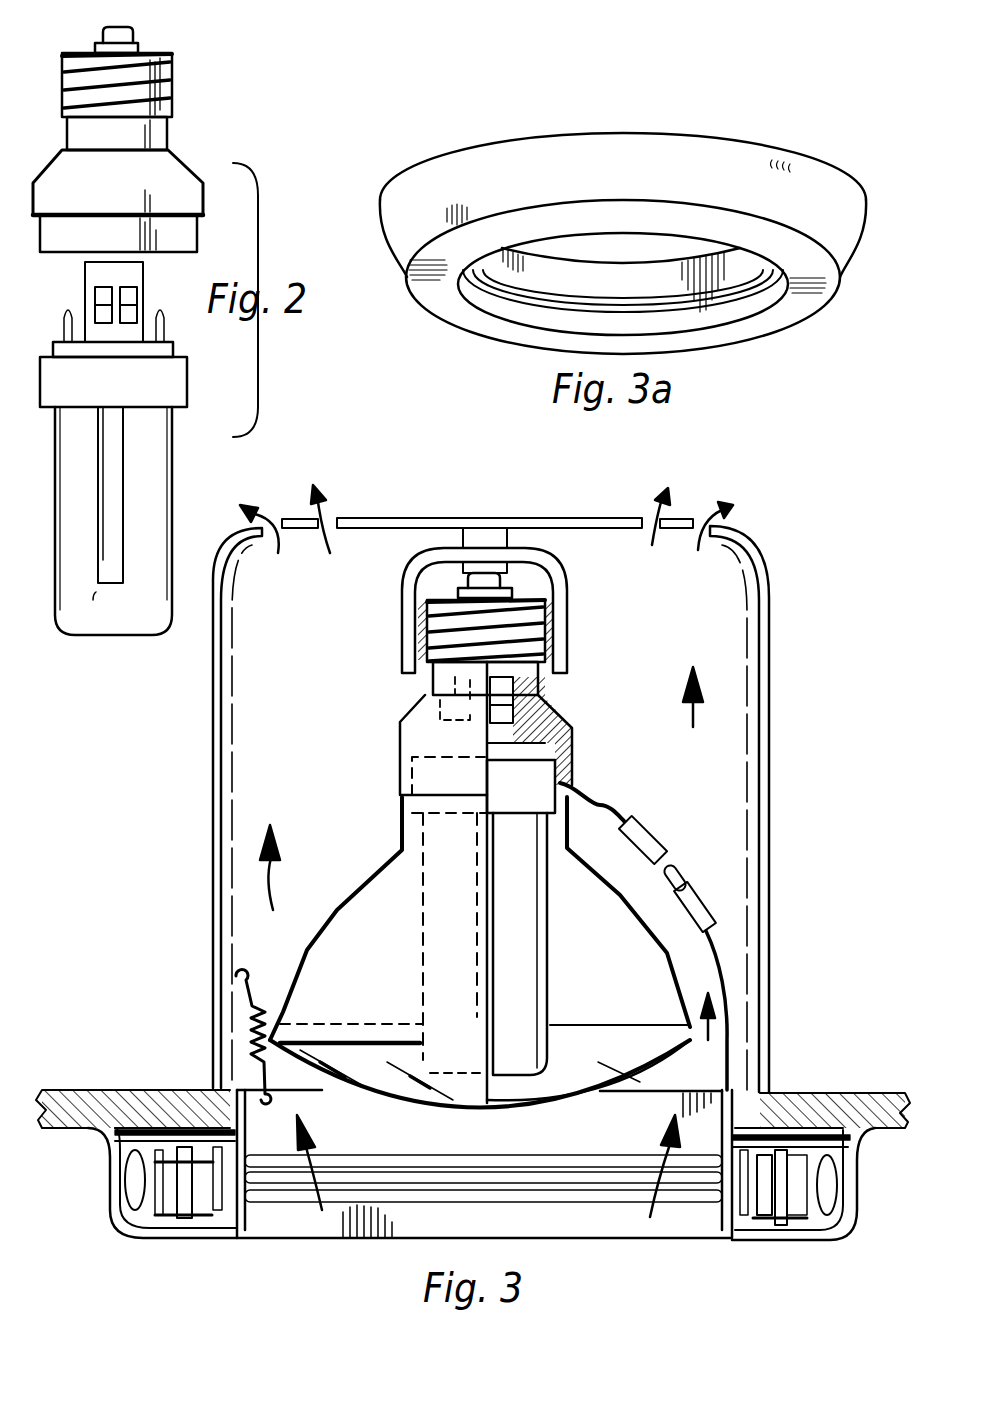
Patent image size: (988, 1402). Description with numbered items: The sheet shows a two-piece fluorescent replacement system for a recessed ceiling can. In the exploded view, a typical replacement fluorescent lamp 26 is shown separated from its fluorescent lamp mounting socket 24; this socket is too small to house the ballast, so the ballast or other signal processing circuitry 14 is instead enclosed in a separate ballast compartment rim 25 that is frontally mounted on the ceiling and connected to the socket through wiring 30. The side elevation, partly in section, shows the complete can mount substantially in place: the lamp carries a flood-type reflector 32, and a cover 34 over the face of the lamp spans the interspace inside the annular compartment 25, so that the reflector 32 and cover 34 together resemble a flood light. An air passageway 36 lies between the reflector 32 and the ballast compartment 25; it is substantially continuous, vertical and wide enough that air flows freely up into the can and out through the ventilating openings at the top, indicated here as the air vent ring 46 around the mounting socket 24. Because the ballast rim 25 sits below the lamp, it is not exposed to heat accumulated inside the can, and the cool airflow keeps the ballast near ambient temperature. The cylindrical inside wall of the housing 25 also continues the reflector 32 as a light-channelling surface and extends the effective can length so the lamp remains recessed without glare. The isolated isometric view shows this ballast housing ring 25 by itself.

In FIG. 3, the circuitry 14 is at (182, 1190).
In FIG. 2, the fluorescent lamp mounting socket 24 is at (160, 183).
In FIG. 3, the ballast compartment rim 25 is at (857, 1163).
In FIG. 2, the replacement fluorescent lamp 26 is at (150, 530).
In FIG. 3, the electrical connectors 30 is at (718, 897).
In FIG. 3, the reflector 32 is at (370, 880).
In FIG. 3, the cover 34 is at (578, 1097).
In FIG. 3, the air passageway 36 is at (723, 1040).
In FIG. 3, the air vent ring 46 is at (642, 518).